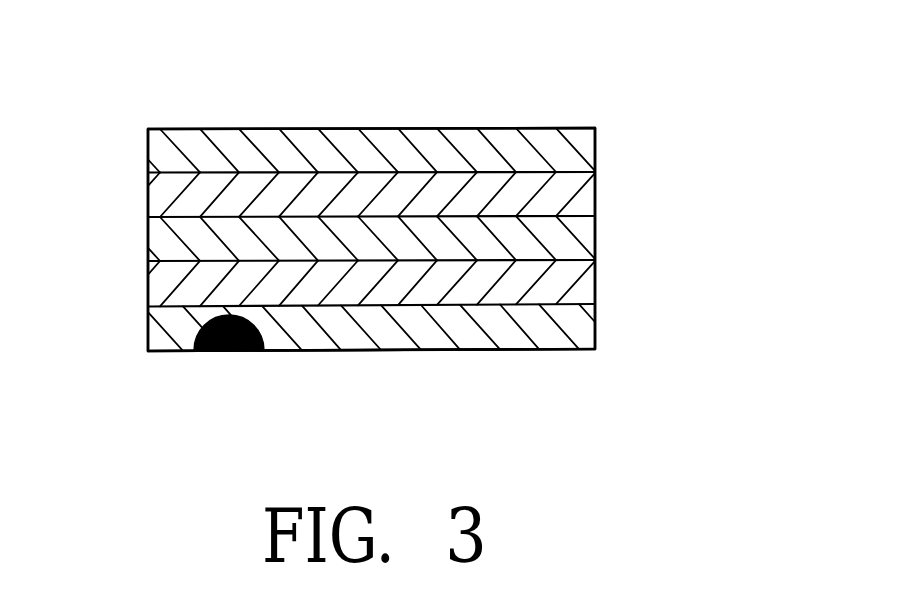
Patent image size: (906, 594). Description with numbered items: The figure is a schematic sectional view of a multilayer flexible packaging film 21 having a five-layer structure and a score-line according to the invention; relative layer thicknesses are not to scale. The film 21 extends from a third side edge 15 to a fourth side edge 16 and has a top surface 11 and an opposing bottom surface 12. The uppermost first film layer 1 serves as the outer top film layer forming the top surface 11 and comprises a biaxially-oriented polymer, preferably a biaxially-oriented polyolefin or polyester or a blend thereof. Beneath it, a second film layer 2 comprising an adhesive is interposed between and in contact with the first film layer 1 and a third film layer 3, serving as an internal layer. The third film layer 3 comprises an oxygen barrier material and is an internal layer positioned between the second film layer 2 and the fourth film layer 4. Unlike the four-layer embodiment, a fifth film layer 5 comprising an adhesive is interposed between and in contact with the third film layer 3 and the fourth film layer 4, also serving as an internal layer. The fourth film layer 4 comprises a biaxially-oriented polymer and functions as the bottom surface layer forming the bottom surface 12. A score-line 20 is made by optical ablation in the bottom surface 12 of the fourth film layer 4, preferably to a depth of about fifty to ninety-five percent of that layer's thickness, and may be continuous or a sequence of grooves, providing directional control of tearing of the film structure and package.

The first film layer 1 is at (585, 148).
The second film layer 2 is at (586, 203).
The third film layer 3 is at (587, 238).
The fourth film layer 4 is at (587, 332).
The fifth film layer 5 is at (587, 286).
The top surface 11 is at (404, 128).
The bottom surface 12 is at (403, 352).
The third side edge 15 is at (595, 192).
The fourth side edge 16 is at (148, 240).
The score-line 20 is at (230, 352).
The multilayer flexible packaging film 21 is at (276, 76).